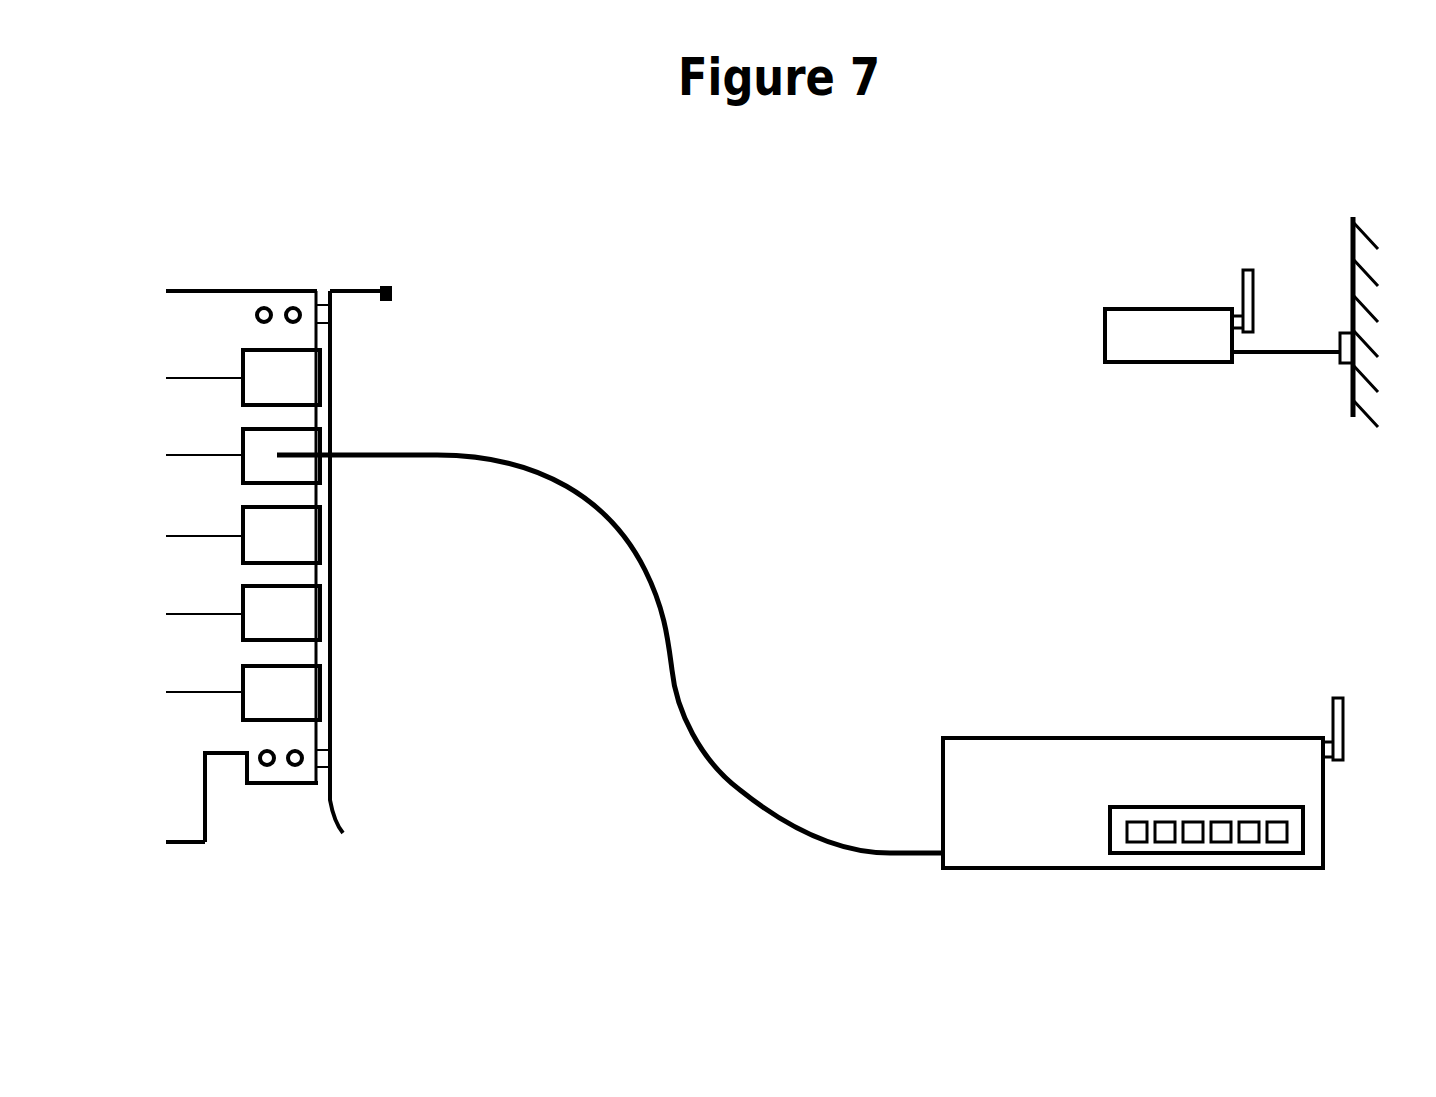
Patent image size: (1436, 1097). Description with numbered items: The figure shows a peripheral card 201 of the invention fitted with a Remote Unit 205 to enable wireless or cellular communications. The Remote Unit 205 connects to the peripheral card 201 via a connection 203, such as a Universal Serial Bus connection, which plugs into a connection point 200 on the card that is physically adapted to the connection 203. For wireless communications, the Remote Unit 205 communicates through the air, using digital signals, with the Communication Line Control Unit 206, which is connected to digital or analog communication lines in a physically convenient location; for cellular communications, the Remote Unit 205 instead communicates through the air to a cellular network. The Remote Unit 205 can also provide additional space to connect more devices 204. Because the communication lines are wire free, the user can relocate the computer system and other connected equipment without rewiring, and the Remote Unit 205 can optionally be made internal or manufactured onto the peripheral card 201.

The connection point 200 is at (243, 478).
The peripheral card 201 is at (210, 823).
The connection 203 is at (615, 527).
The devices 204 is at (1110, 848).
The Remote Unit 205 is at (1323, 815).
The Communication Line Control Unit 206 is at (1105, 337).